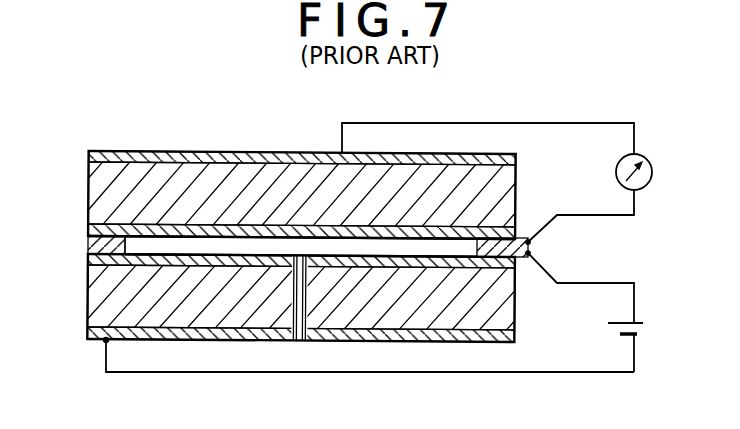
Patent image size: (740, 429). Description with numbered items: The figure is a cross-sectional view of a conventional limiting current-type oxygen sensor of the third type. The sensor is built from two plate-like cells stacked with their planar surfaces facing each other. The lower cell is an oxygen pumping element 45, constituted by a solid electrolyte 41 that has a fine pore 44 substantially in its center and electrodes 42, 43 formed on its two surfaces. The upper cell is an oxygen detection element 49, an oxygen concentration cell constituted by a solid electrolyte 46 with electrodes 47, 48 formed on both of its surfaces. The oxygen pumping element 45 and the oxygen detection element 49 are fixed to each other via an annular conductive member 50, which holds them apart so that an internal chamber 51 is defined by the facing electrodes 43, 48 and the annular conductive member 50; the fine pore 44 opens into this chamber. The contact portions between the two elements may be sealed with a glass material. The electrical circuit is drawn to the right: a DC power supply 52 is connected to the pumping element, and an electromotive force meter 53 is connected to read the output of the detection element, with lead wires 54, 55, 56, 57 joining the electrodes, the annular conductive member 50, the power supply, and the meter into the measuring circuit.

The solid electrolyte 41 is at (143, 300).
The electrode 42 is at (212, 332).
The electrode 43 is at (263, 262).
The fine pore 44 is at (299, 340).
The oxygen pumping element 45 is at (271, 337).
The solid electrolyte 46 is at (158, 187).
The electrode 47 is at (220, 151).
The electrode 48 is at (260, 232).
The oxygen detection element 49 is at (274, 166).
The annular conductive member 50 is at (515, 242).
The internal chamber 51 is at (410, 244).
The DC power supply 52 is at (636, 323).
The electromotive force meter 53 is at (652, 172).
The lead wire 54 is at (470, 373).
The lead wire 55 is at (602, 282).
The lead wire 56 is at (478, 123).
The lead wire 57 is at (592, 216).